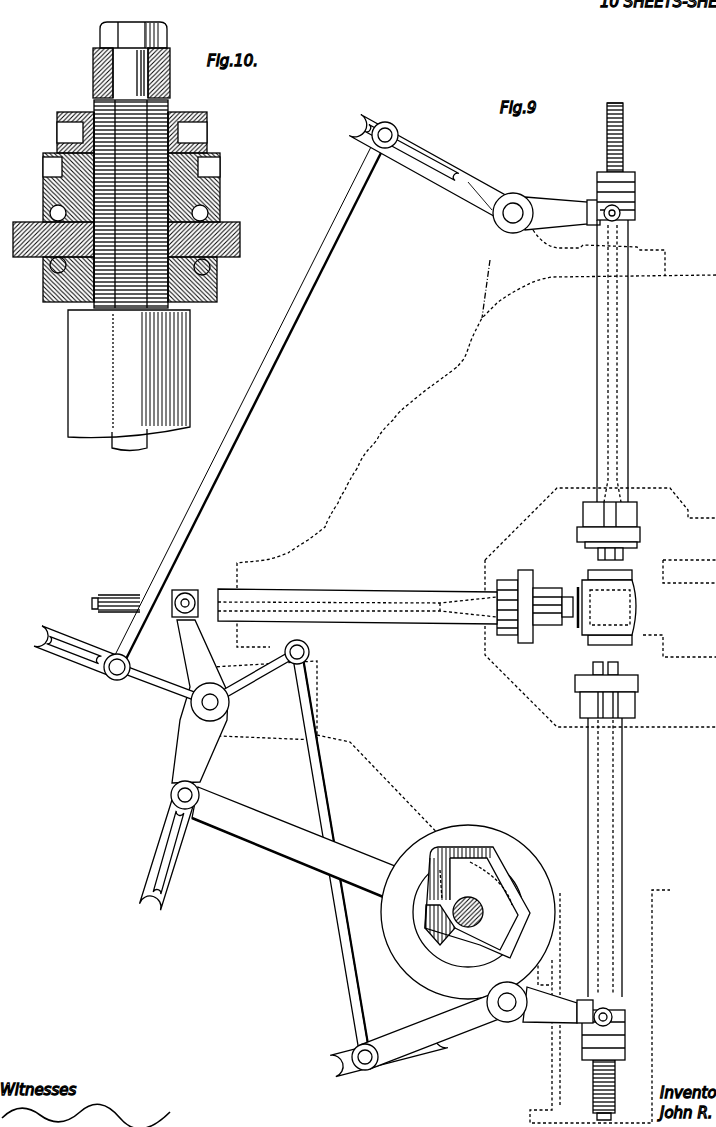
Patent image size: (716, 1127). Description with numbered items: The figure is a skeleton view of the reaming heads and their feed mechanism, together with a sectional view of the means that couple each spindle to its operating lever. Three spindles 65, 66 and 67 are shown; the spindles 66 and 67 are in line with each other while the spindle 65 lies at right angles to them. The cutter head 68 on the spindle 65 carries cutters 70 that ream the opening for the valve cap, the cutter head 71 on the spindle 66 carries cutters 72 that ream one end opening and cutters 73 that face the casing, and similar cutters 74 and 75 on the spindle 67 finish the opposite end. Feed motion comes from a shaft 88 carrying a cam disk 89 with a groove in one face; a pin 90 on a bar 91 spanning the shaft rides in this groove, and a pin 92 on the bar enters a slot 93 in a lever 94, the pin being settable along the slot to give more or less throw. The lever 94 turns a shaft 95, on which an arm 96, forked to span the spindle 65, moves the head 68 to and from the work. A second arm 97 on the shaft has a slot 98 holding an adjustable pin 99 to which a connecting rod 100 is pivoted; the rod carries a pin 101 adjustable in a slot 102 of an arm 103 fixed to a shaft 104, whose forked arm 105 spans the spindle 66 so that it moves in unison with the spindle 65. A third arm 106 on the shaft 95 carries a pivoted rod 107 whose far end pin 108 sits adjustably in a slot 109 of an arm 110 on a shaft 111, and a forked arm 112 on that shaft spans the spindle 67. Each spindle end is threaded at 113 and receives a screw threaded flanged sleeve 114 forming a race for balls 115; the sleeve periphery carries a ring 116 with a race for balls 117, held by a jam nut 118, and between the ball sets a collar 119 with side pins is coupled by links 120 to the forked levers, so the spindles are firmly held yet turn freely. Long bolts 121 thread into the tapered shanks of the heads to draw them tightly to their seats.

In FIG. 9, the spindle 65 is at (357, 596).
In FIG. 10, the spindle 66 is at (205, 364).
In FIG. 9, the spindle 66 is at (624, 361).
In FIG. 9, the spindle 67 is at (616, 857).
In FIG. 9, the cutter head 68 is at (529, 606).
In FIG. 9, the cutters 70 is at (548, 622).
In FIG. 9, the cutter head 71 is at (618, 531).
In FIG. 9, the cutters 72 is at (634, 575).
In FIG. 9, the cutters 73 is at (623, 552).
In FIG. 9, the cutters 74 is at (597, 661).
In FIG. 9, the cutters 75 is at (640, 681).
In FIG. 9, the shaft 88 is at (440, 950).
In FIG. 9, the cam disk 89 is at (462, 902).
In FIG. 9, the pin 90 is at (430, 892).
In FIG. 9, the bar 91 is at (364, 870).
In FIG. 9, the pin 92 is at (200, 790).
In FIG. 9, the slot 93 is at (168, 872).
In FIG. 9, the lever 94 is at (176, 768).
In FIG. 9, the shaft 95 is at (192, 708).
In FIG. 9, the arm 96 is at (200, 701).
In FIG. 9, the arm 97 is at (164, 684).
In FIG. 9, the slot 98 is at (60, 648).
In FIG. 9, the adjustable pin 99 is at (108, 672).
In FIG. 9, the connecting rod 100 is at (268, 388).
In FIG. 9, the pin 101 is at (396, 126).
In FIG. 9, the slot 102 is at (435, 160).
In FIG. 9, the arm 103 is at (473, 200).
In FIG. 9, the shaft 104 is at (520, 200).
In FIG. 9, the forked arm 105 is at (569, 200).
In FIG. 9, the arm 106 is at (253, 687).
In FIG. 9, the rod 107 is at (328, 810).
In FIG. 9, the pivot 108 is at (372, 1045).
In FIG. 9, the slot 109 is at (400, 1045).
In FIG. 9, the arm 110 is at (465, 1028).
In FIG. 9, the shaft 111 is at (510, 1022).
In FIG. 9, the forked arm 112 is at (560, 1012).
In FIG. 10, the threaded end 113 is at (166, 104).
In FIG. 9, the threaded end 113 is at (623, 148).
In FIG. 10, the screw threaded flanged sleeve 114 is at (217, 292).
In FIG. 10, the balls 115 is at (210, 268).
In FIG. 10, the ring 116 is at (220, 190).
In FIG. 10, the balls 117 is at (208, 212).
In FIG. 10, the jam nut 118 is at (207, 168).
In FIG. 10, the collar 119 is at (240, 237).
In FIG. 9, the collar 119 is at (636, 208).
In FIG. 9, the links 120 is at (620, 208).
In FIG. 10, the long bolt 121 is at (167, 30).
In FIG. 9, the long bolt 121 is at (623, 110).